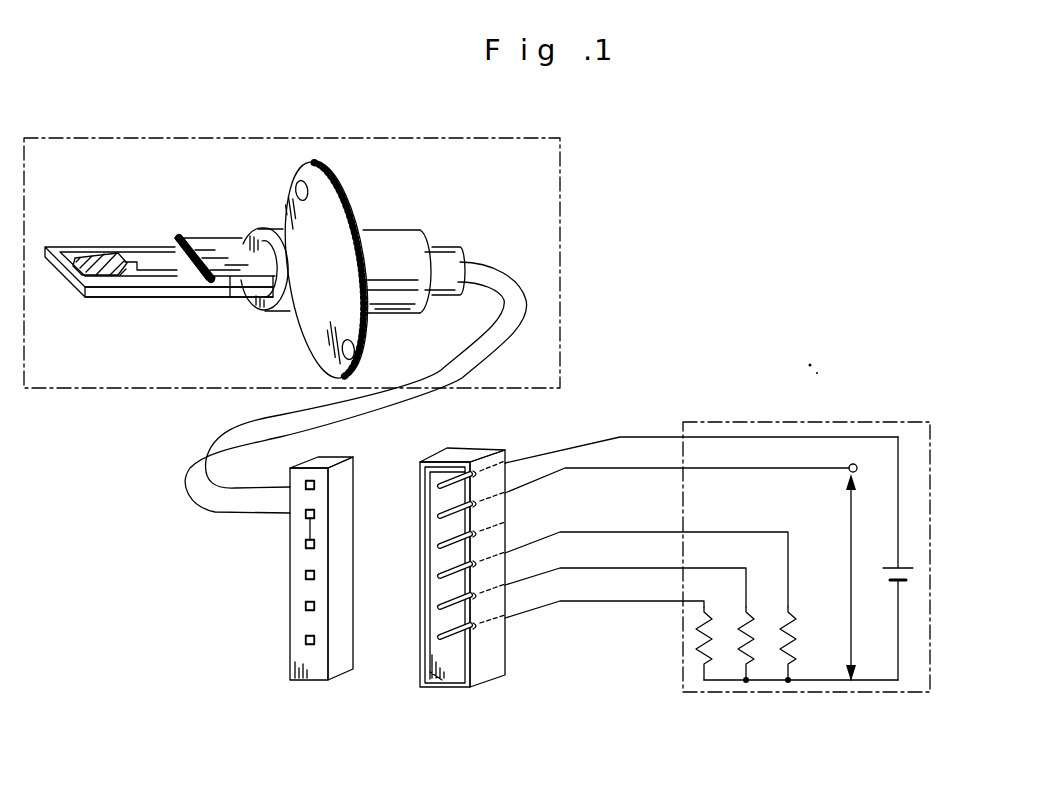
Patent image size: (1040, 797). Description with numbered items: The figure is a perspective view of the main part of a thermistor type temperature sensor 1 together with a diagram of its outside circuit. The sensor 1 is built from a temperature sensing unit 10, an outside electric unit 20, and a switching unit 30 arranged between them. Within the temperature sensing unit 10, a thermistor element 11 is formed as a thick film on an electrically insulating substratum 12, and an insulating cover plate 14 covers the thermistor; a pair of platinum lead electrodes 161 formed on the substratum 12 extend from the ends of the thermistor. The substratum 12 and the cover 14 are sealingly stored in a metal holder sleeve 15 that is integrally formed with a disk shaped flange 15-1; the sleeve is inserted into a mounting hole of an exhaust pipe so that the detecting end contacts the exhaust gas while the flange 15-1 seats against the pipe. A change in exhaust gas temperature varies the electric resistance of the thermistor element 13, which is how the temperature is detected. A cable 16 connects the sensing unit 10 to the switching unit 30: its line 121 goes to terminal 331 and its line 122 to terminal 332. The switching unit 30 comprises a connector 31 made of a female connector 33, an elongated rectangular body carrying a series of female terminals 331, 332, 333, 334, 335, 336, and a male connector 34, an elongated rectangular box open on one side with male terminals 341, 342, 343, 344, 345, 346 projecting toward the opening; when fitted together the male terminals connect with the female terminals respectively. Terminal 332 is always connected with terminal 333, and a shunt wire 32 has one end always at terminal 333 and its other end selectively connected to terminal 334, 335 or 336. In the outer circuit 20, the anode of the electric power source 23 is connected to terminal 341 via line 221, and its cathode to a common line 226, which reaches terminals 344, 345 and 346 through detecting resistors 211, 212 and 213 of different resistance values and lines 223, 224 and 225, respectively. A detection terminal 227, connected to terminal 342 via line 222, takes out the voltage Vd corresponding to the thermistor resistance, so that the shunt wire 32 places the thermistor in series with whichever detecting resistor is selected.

The thermistor type temperature sensor 1 is at (618, 150).
The temperature sensing unit 10 is at (232, 137).
The thermistor element 11 is at (58, 272).
The substratum 12 is at (132, 294).
The thermistor element 13 is at (92, 255).
The cover plate 14 is at (208, 248).
The holder sleeve 15 is at (393, 253).
The flange 15-1 is at (352, 197).
The cable 16 is at (633, 235).
The line 121 is at (500, 272).
The line 122 is at (510, 302).
The lead electrodes 161 is at (147, 253).
The outside electric unit 20 is at (932, 494).
The electric power source 23 is at (912, 575).
The switching unit 30 is at (285, 712).
The connector 31 is at (468, 688).
The shunt wire 32 is at (290, 607).
The female connector 33 is at (290, 649).
The male connector 34 is at (482, 690).
The female terminal 331 is at (315, 485).
The female terminal 332 is at (315, 514).
The female terminal 333 is at (315, 544).
The female terminal 334 is at (315, 575).
The female terminal 335 is at (315, 606).
The female terminal 336 is at (315, 640).
The male terminal 341 is at (446, 482).
The male terminal 342 is at (476, 503).
The male terminal 343 is at (476, 533).
The male terminal 344 is at (476, 563).
The male terminal 345 is at (476, 595).
The male terminal 346 is at (476, 625).
The line 221 is at (701, 436).
The line 222 is at (677, 466).
The line 223 is at (646, 554).
The line 224 is at (625, 572).
The line 225 is at (604, 594).
The common line 226 is at (853, 685).
The detection terminal 227 is at (858, 466).
The detecting resistor 211 is at (805, 663).
The detecting resistor 212 is at (763, 663).
The detecting resistor 213 is at (717, 663).